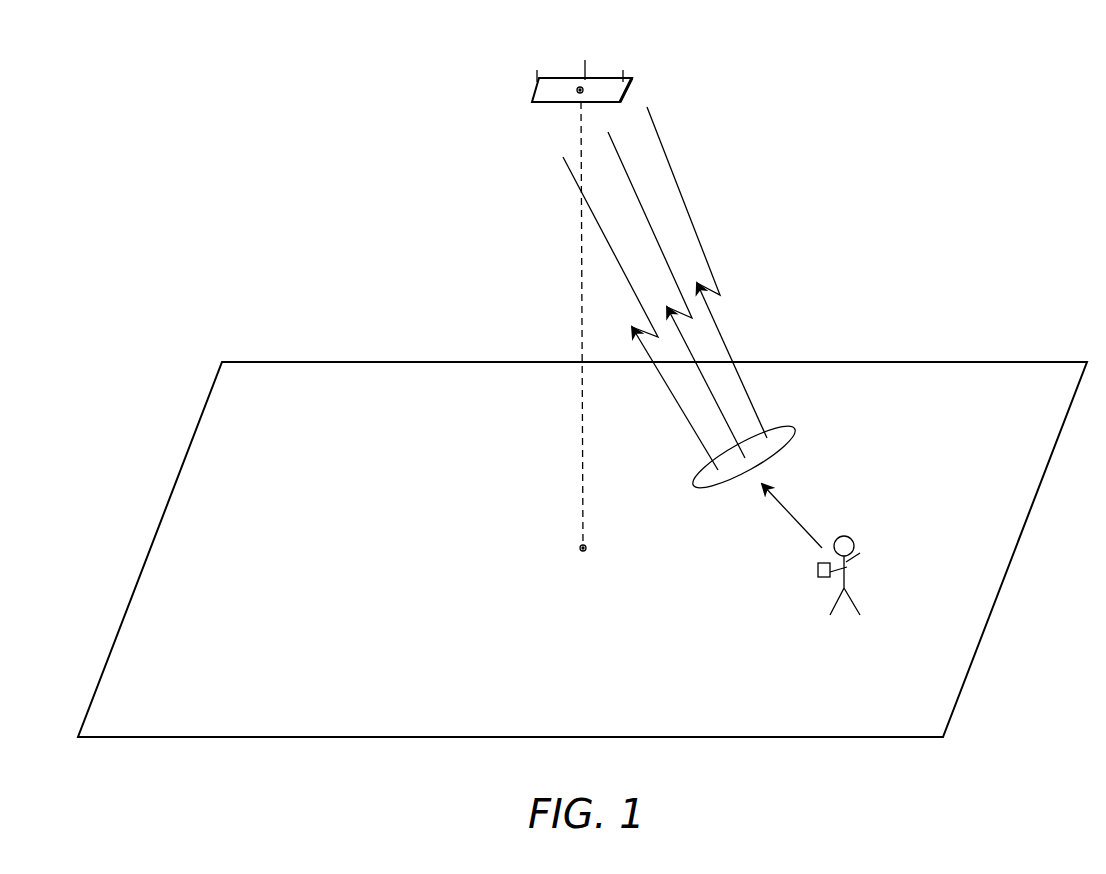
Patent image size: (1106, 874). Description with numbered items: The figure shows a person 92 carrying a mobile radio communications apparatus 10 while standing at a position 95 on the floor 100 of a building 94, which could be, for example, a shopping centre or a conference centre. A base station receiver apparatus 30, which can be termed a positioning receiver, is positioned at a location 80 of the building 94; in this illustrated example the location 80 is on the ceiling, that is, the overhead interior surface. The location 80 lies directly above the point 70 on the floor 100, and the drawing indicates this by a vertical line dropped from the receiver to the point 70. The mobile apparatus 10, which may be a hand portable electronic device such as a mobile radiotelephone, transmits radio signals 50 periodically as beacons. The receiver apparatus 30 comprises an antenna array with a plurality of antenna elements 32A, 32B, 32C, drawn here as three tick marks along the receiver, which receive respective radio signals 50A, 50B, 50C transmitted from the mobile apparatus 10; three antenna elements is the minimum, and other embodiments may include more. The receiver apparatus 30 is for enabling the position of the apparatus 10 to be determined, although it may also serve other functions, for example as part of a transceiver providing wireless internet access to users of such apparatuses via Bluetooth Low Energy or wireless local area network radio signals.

The mobile radio communications apparatus 10 is at (818, 570).
The base station receiver apparatus 30 is at (536, 114).
The antenna element 32A is at (534, 80).
The antenna element 32B is at (584, 62).
The antenna element 32C is at (626, 72).
The radio signals 50 is at (796, 429).
The radio signal 50A is at (570, 176).
The radio signal 50B is at (712, 400).
The radio signal 50C is at (687, 200).
The point 70 is at (578, 549).
The location 80 is at (583, 87).
The person 92 is at (903, 514).
The building 94 is at (1038, 254).
The position 95 is at (857, 559).
The floor 100 is at (400, 738).